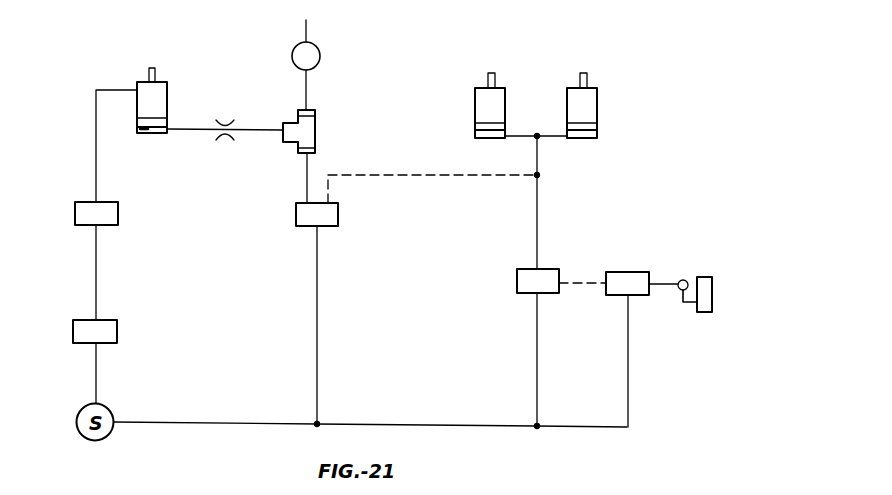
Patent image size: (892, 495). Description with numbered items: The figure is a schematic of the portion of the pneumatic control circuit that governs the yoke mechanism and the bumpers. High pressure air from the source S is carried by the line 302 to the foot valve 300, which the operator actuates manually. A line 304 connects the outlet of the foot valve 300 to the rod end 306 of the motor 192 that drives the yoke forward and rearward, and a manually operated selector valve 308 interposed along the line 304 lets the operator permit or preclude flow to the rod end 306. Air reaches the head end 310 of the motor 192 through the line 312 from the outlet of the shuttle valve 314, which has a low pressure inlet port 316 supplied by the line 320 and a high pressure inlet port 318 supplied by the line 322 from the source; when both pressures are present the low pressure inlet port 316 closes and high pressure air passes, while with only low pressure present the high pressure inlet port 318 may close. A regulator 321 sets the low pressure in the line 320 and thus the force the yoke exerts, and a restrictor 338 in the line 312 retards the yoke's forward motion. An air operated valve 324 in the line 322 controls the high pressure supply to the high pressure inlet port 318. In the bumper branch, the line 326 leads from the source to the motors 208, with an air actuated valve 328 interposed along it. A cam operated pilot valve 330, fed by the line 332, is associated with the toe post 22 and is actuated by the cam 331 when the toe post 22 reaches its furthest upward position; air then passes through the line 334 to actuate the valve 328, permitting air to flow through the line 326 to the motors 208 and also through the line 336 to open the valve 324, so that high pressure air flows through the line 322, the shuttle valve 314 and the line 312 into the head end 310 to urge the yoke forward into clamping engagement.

The toe post 22 is at (712, 290).
The motor 192 is at (168, 97).
The motors 208 is at (558, 106).
The foot valve 300 is at (105, 344).
The line 302 is at (96, 378).
The line 304 is at (96, 181).
The rod end 306 is at (166, 83).
The selector valve 308 is at (108, 226).
The head end 310 is at (142, 131).
The line 312 is at (181, 131).
The shuttle valve 314 is at (312, 131).
The low pressure inlet port 316 is at (312, 116).
The high pressure inlet port 318 is at (312, 148).
The line 320 is at (308, 85).
The regulator 321 is at (318, 63).
The line 322 is at (307, 186).
The air operated valve 324 is at (330, 227).
The line 326 is at (537, 158).
The air actuated valve 328 is at (525, 294).
The pilot valve 330 is at (631, 272).
The cam 331 is at (685, 299).
The line 332 is at (628, 355).
The line 334 is at (578, 284).
The line 336 is at (415, 175).
The restrictor 338 is at (229, 141).